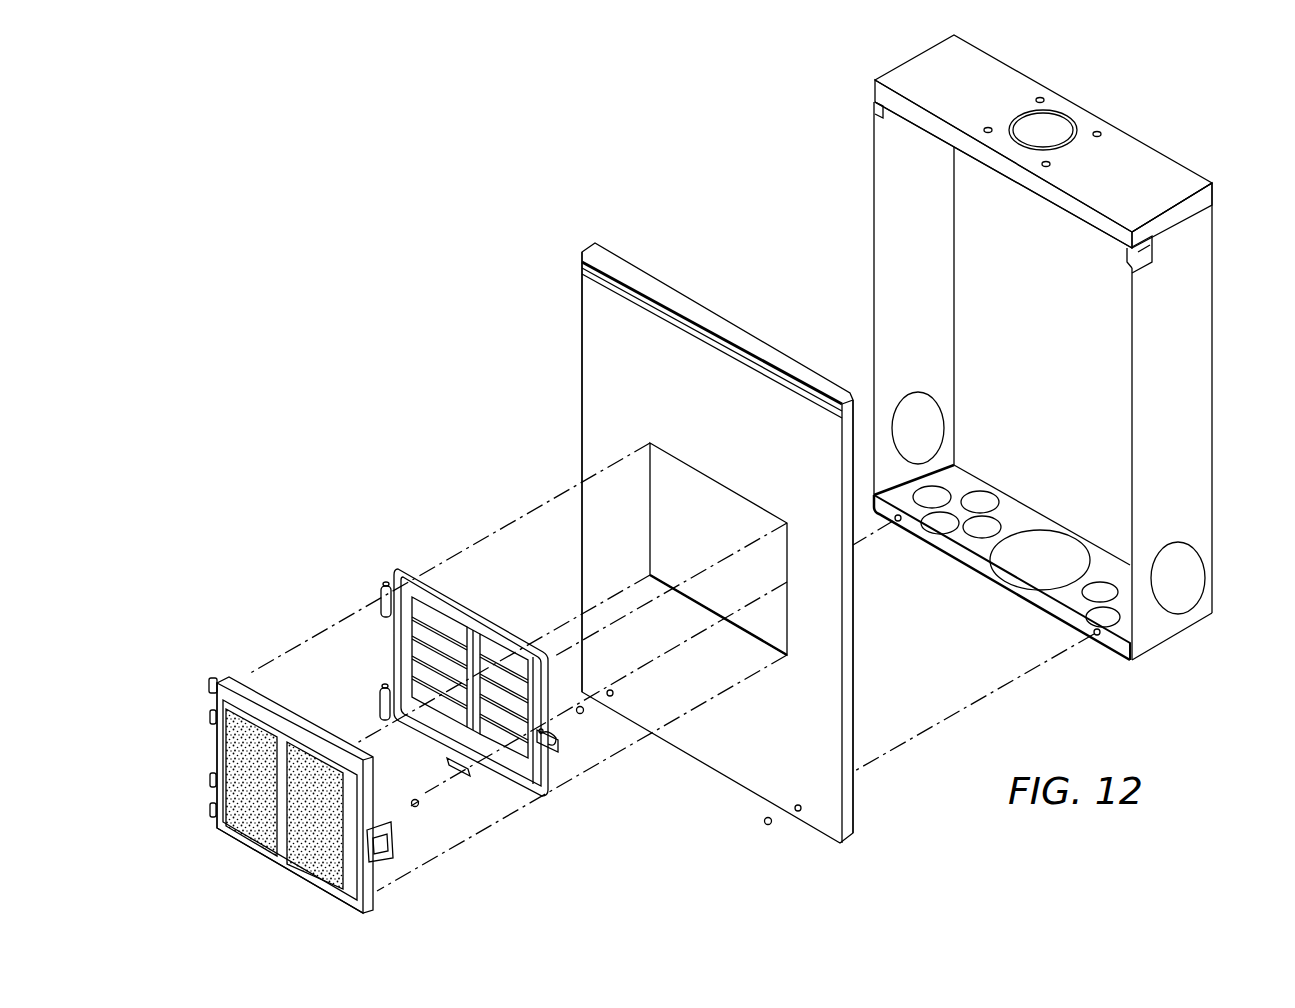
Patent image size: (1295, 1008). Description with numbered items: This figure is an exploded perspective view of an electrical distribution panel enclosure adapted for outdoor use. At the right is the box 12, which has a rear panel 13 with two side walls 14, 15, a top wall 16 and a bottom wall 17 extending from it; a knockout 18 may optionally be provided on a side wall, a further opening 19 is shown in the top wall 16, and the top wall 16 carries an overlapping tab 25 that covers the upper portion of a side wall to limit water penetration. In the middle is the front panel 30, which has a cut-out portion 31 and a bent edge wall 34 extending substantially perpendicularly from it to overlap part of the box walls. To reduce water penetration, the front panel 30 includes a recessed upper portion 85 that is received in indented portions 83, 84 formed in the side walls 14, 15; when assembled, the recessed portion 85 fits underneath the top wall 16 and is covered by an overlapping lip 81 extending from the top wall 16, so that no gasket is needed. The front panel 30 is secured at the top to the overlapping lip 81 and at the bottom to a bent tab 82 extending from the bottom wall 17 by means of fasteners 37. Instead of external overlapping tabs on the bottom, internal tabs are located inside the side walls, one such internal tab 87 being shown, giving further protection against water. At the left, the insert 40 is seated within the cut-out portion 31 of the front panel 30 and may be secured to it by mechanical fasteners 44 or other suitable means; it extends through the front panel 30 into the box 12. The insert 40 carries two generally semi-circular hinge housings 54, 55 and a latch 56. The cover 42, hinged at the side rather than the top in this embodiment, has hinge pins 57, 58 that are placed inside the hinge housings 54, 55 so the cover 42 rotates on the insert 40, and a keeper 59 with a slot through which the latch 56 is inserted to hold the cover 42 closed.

The box 12 is at (1139, 66).
The rear panel 13 is at (1049, 343).
The side wall 14 is at (955, 343).
The side wall 15 is at (1195, 300).
The top wall 16 is at (1003, 71).
The bottom wall 17 is at (1013, 505).
The knockout 18 is at (1190, 568).
The conduit opening 19 is at (1090, 117).
The overlapping tab 25 is at (1200, 203).
The front panel 30 is at (585, 398).
The cut-out portion 31 is at (650, 540).
The bent edge wall 34 is at (850, 578).
The fasteners 37 is at (762, 822).
The insert 40 is at (523, 778).
The cover 42 is at (250, 832).
The mechanical fasteners 44 is at (420, 808).
The hinge housing 54 is at (382, 690).
The hinge housing 55 is at (380, 592).
The latch 56 is at (560, 748).
The hinge pin 57 is at (210, 800).
The hinge pin 58 is at (213, 680).
The keeper 59 is at (395, 855).
The overlapping lip 81 is at (1008, 170).
The bent tab 82 is at (965, 563).
The indented portion 83 is at (875, 108).
The indented portion 84 is at (1145, 266).
The recessed upper portion 85 is at (710, 322).
The internal tab 87 is at (945, 458).